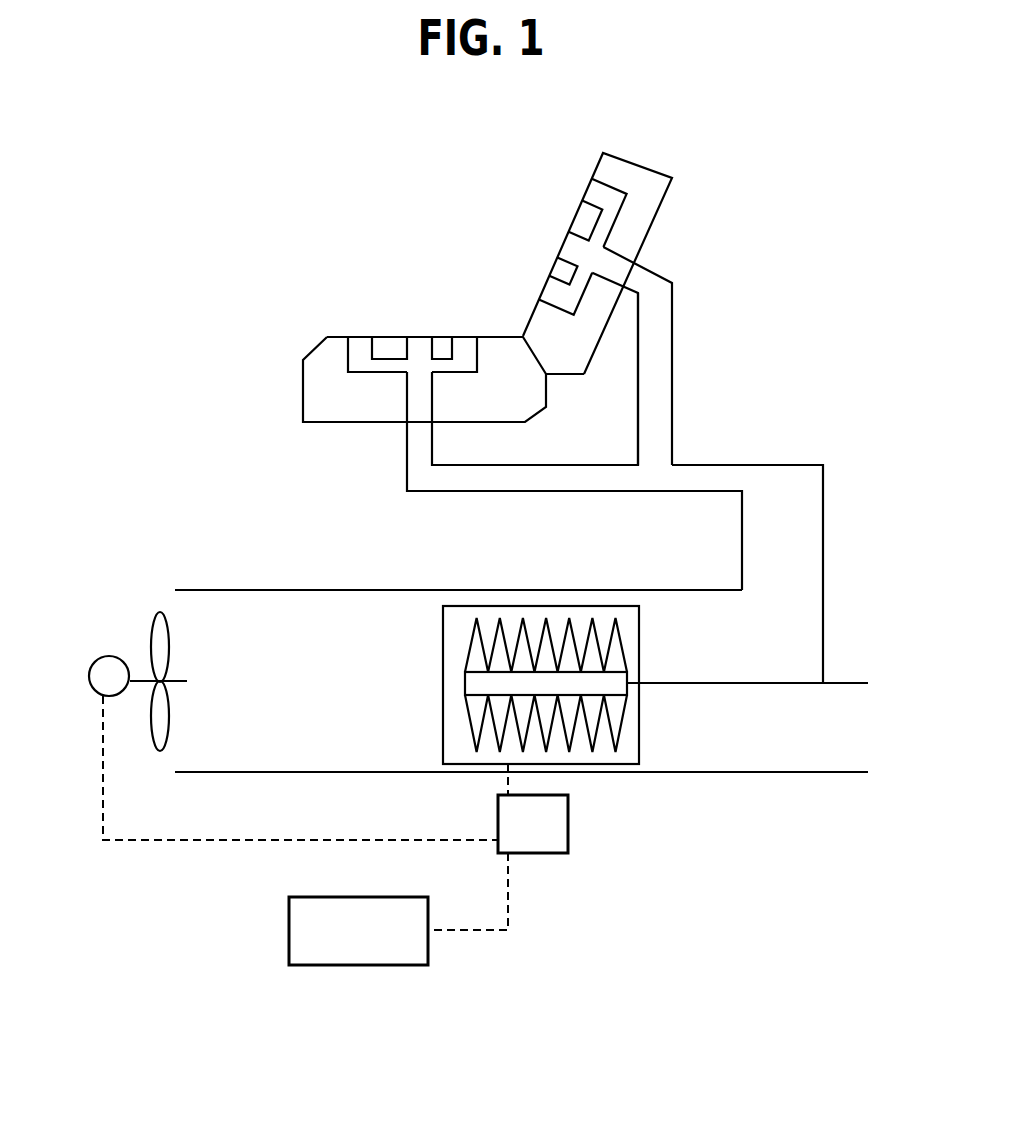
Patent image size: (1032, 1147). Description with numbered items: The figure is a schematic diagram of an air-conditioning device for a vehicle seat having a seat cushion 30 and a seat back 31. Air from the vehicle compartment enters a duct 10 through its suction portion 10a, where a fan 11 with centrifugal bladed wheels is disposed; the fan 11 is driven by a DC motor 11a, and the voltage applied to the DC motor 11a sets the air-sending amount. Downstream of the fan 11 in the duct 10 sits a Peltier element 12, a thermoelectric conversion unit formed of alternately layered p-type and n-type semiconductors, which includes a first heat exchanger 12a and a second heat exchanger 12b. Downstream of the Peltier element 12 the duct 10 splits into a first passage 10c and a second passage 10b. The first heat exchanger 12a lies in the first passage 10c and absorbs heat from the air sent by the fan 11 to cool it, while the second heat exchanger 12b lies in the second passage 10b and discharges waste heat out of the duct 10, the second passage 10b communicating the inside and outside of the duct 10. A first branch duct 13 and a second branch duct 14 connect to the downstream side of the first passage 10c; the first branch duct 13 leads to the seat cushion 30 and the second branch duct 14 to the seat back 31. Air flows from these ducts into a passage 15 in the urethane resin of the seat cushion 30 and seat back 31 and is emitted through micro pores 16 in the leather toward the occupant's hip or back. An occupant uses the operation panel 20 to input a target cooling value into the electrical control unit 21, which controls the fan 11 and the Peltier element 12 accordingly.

The duct 10 is at (268, 588).
The suction portion 10a is at (183, 753).
The second passage 10b is at (840, 702).
The first passage 10c is at (805, 582).
The fan 11 is at (92, 701).
The DC motor 11a is at (108, 656).
The Peltier element 12 is at (540, 686).
The first heat exchanger 12a is at (627, 630).
The second heat exchanger 12b is at (629, 749).
The first branch duct 13 is at (533, 477).
The second branch duct 14 is at (660, 402).
The passage 15 is at (613, 268).
The micro pores 16 is at (462, 345).
The operation panel 20 is at (357, 967).
The electrical control unit 21 is at (553, 855).
The seat cushion 30 is at (318, 388).
The seat back 31 is at (643, 167).